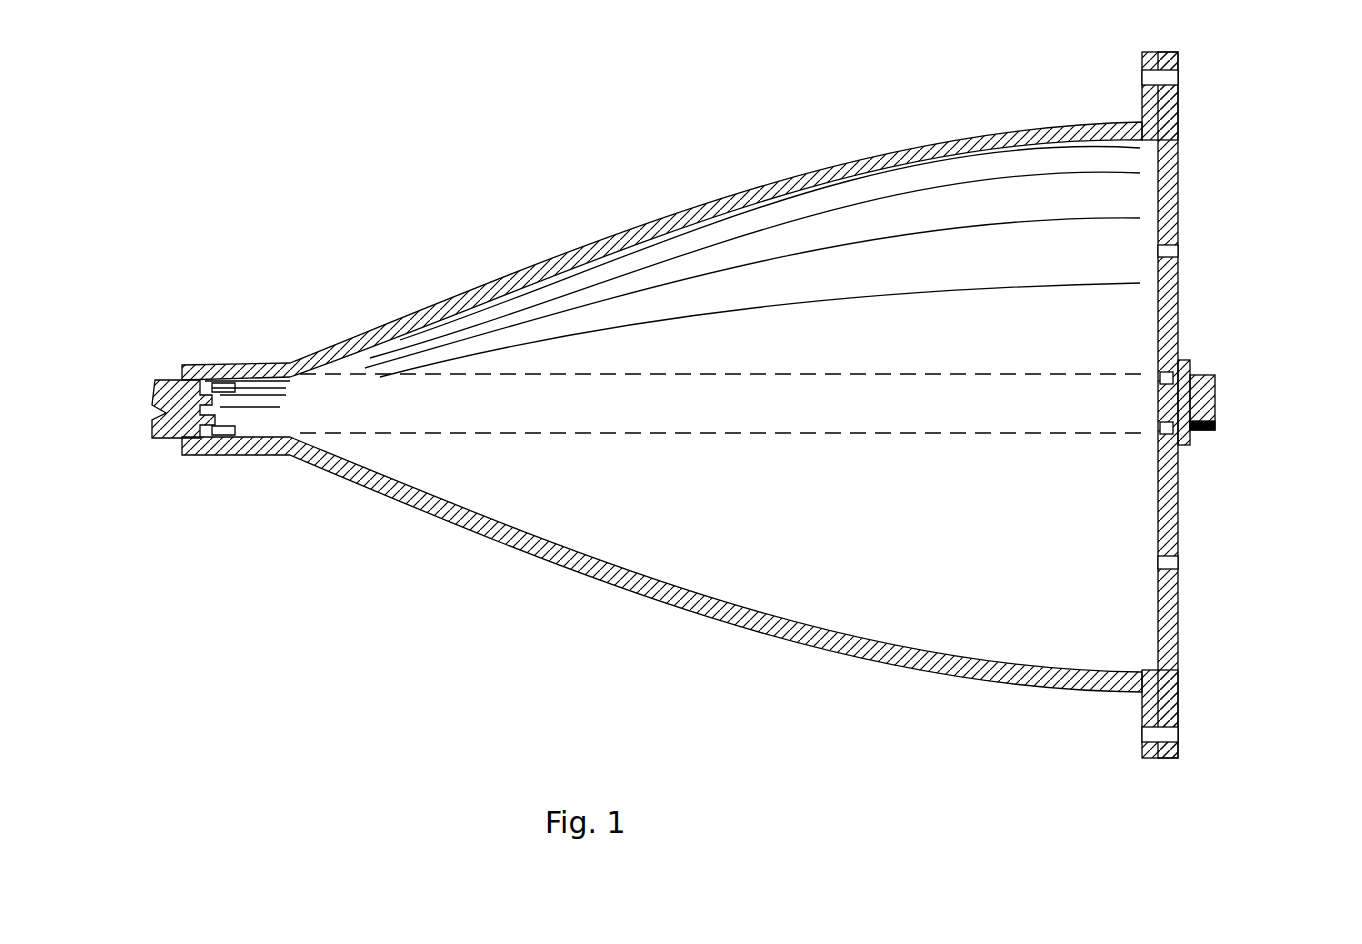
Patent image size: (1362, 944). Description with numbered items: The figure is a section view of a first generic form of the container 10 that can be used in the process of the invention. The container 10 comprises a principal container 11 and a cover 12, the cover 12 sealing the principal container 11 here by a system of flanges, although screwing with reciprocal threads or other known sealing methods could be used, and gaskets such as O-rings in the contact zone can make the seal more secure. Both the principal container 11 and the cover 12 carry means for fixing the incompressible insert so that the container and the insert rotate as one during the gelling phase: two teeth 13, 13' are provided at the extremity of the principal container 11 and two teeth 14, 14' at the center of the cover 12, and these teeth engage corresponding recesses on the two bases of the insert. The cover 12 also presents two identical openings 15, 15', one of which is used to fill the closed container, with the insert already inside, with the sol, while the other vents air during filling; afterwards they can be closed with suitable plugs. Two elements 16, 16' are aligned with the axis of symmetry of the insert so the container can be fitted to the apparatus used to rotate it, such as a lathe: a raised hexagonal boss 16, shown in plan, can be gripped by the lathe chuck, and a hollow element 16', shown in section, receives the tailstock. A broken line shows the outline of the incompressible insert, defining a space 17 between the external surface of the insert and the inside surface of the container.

The container 10 is at (538, 214).
The principal container 11 is at (890, 152).
The cover 12 is at (1180, 302).
The tooth 13 is at (217, 353).
The tooth 13' is at (225, 464).
The tooth 14 is at (1227, 353).
The tooth 14' is at (1224, 449).
The opening 15 is at (1188, 230).
The opening 15' is at (1194, 589).
The raised hexagonal boss 16 is at (1259, 402).
The hollow element 16' is at (116, 423).
The space 17 is at (780, 568).